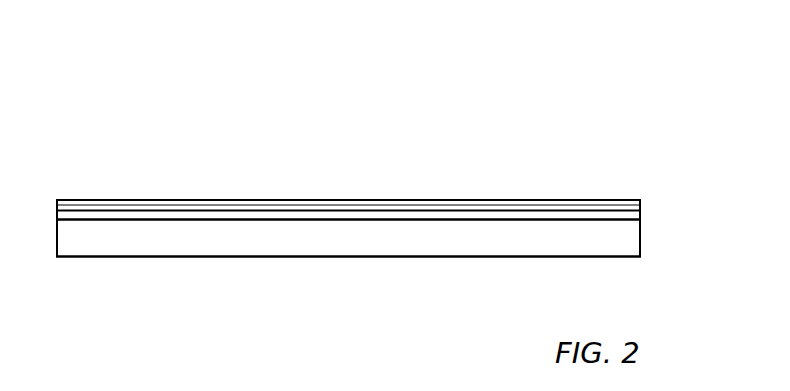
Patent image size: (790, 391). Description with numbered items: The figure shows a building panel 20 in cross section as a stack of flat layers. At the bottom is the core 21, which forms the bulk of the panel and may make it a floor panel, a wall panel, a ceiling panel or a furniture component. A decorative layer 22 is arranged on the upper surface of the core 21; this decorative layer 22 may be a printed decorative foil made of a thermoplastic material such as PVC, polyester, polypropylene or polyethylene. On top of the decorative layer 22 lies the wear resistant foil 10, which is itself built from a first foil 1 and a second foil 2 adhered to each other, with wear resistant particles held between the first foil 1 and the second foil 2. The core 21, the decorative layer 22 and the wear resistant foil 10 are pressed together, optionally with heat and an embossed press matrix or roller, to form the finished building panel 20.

The wear resistant foil 10 is at (590, 202).
The building panel 20 is at (187, 180).
The core 21 is at (240, 240).
The decorative layer 22 is at (333, 214).
The first foil 1 is at (413, 205).
The second foil 2 is at (515, 200).